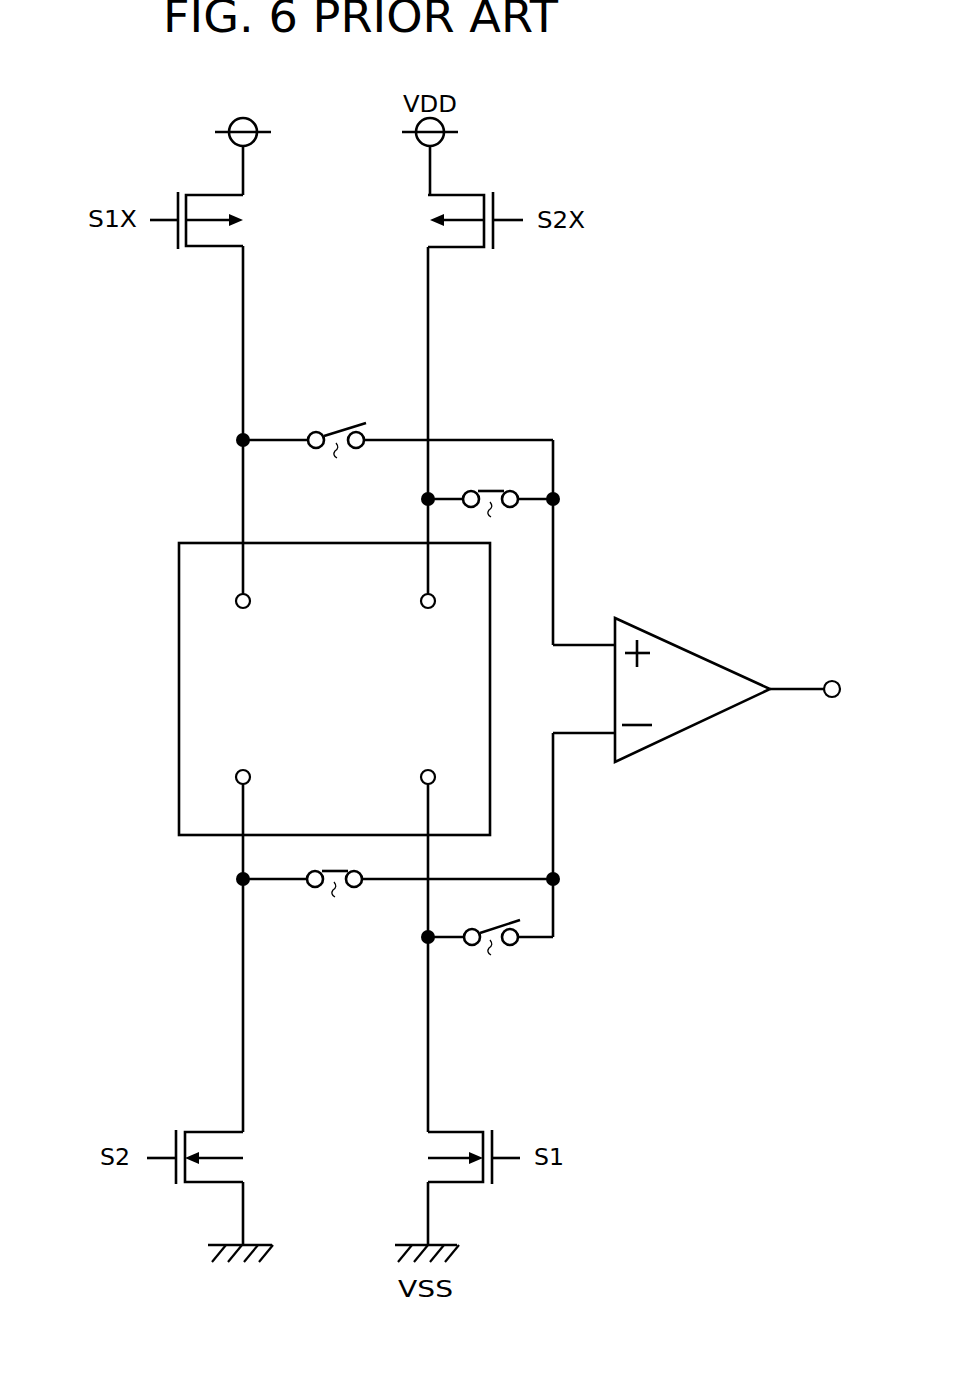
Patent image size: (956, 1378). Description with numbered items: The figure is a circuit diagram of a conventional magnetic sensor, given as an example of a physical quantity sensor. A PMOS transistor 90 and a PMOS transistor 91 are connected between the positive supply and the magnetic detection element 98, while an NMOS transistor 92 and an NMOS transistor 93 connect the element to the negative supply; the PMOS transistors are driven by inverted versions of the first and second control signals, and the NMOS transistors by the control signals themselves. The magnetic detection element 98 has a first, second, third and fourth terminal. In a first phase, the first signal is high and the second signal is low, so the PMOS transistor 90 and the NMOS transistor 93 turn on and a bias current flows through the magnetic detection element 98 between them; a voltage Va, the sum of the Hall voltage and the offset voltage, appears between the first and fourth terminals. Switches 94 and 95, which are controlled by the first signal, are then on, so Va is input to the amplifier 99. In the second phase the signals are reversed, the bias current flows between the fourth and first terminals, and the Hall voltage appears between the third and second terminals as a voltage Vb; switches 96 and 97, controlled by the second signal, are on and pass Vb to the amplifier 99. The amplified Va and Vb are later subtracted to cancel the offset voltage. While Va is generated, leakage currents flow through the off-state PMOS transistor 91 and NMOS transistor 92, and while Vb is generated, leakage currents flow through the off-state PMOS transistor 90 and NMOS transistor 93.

The PMOS transistor 90 is at (178, 193).
The PMOS transistor 91 is at (493, 193).
The NMOS transistor 92 is at (179, 1184).
The NMOS transistor 93 is at (489, 1184).
The switch 94 is at (490, 498).
The switch 95 is at (334, 879).
The switch 96 is at (337, 440).
The switch 97 is at (492, 939).
The magnetic detection element 98 is at (178, 642).
The amplifier 99 is at (680, 645).